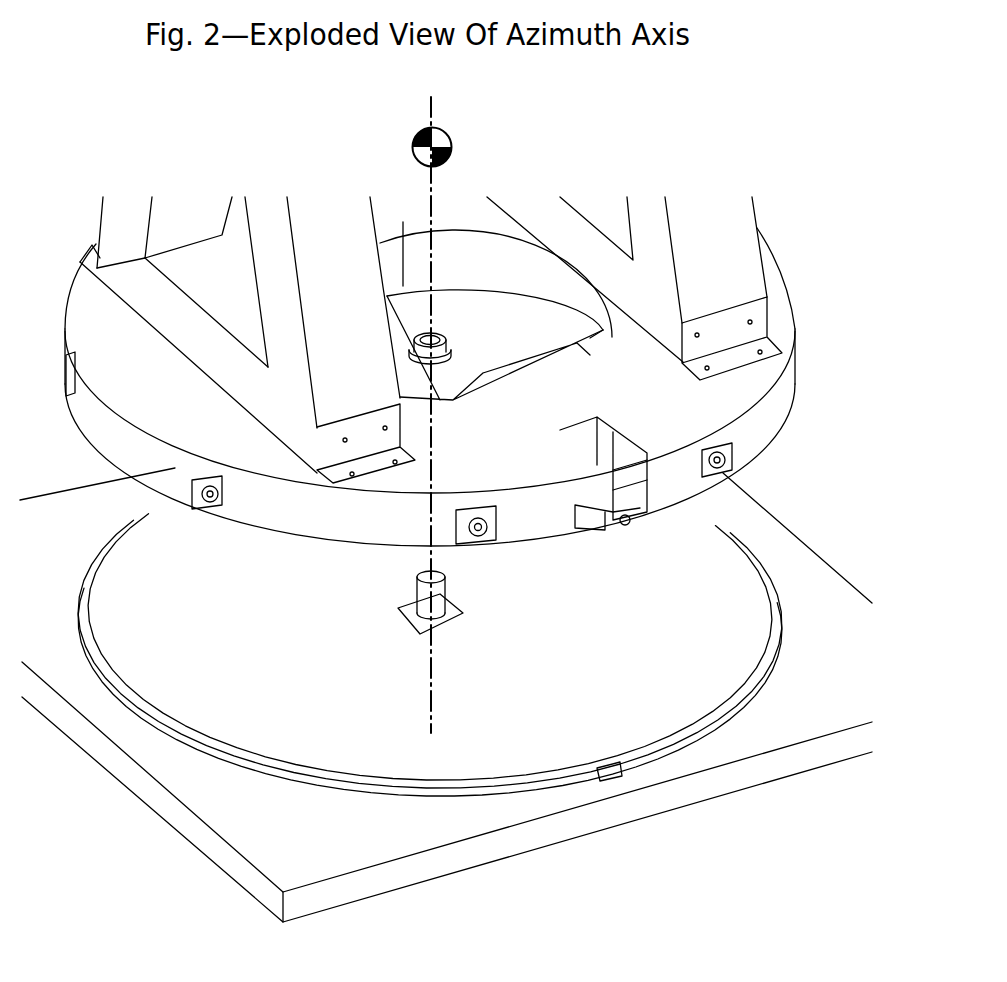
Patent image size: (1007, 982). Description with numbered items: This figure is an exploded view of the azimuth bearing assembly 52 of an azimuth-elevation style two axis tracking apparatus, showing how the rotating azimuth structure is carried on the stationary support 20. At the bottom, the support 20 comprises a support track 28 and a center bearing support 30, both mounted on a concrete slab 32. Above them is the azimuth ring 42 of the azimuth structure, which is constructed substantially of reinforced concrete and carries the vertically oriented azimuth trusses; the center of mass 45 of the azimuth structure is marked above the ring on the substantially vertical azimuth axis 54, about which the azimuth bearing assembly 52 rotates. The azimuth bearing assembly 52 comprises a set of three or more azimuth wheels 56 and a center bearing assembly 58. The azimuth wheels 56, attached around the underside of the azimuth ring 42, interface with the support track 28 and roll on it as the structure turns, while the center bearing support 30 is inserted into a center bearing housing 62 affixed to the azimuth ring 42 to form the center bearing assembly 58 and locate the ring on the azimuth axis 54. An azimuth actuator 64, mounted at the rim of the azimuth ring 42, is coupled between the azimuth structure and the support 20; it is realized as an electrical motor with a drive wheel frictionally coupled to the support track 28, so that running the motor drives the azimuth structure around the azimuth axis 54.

The support 20 is at (295, 830).
The support track 28 is at (451, 797).
The center bearing support 30 is at (448, 603).
The concrete slab 32 is at (752, 742).
The azimuth ring 42 is at (772, 411).
The center of mass 45 is at (453, 150).
The azimuth bearing assembly 52 is at (307, 653).
The azimuth axis 54 is at (440, 698).
The azimuth wheels 56 is at (399, 455).
The center bearing assembly 58 is at (438, 326).
The center bearing housing 62 is at (452, 348).
The azimuth actuator 64 is at (632, 527).